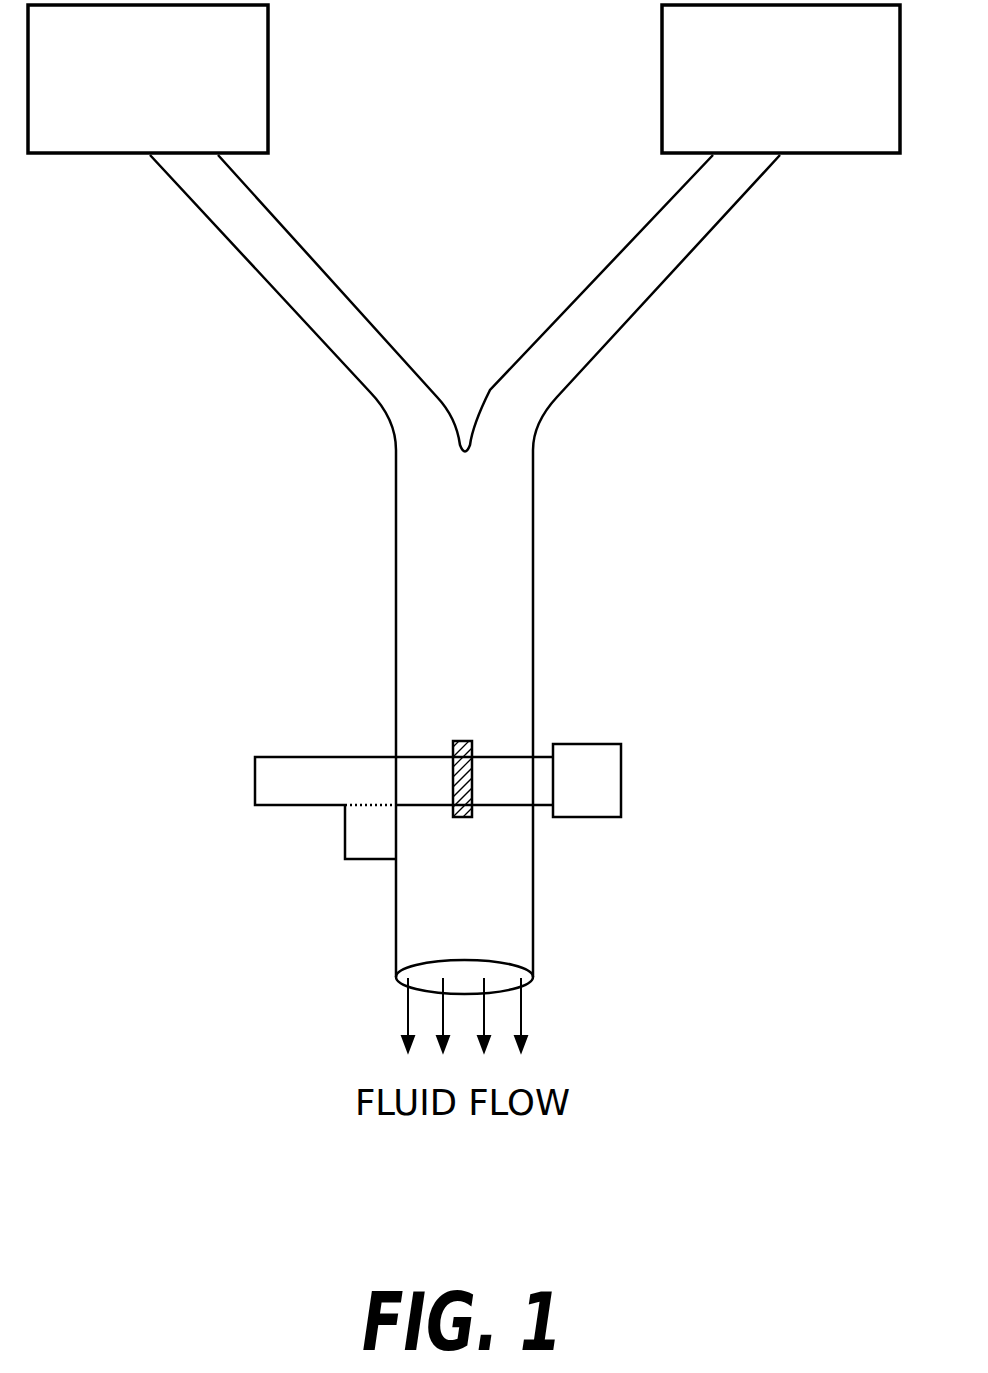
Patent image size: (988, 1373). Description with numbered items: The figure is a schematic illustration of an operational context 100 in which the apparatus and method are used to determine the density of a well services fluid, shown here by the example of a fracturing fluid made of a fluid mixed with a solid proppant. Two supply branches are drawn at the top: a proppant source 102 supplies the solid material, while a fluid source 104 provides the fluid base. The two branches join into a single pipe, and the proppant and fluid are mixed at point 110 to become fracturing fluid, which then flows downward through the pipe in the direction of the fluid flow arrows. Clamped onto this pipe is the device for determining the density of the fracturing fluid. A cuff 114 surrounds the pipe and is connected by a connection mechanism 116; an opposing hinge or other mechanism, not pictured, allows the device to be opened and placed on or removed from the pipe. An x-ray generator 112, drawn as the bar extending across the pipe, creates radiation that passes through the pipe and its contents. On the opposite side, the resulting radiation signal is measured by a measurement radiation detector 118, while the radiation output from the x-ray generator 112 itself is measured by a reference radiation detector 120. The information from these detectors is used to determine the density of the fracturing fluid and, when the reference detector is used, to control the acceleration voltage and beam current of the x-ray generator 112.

The operational context 100 is at (643, 565).
The proppant source 102 is at (177, 96).
The fluid source 104 is at (808, 96).
The mixing point 110 is at (495, 526).
The x-ray generator 112 is at (325, 777).
The cuff 114 is at (503, 776).
The connection mechanism 116 is at (461, 764).
The measurement radiation detector 118 is at (583, 773).
The reference radiation detector 120 is at (371, 833).